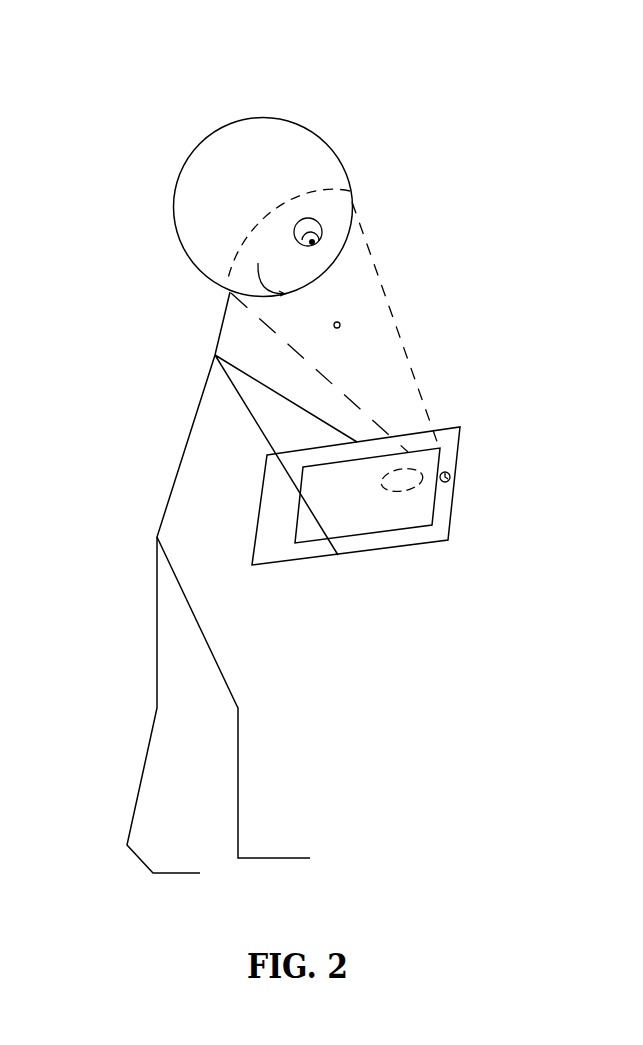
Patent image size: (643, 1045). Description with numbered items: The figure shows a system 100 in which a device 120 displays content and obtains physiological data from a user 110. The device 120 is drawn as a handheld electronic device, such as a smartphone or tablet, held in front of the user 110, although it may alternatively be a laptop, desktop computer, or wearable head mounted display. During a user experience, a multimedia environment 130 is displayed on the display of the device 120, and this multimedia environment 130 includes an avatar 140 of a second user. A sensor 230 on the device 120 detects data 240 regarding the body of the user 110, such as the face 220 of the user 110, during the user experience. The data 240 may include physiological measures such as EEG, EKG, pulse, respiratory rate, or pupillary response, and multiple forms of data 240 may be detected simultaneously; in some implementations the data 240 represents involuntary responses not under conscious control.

The system environment 100 is at (109, 126).
The user 110 is at (192, 425).
The device 120 is at (412, 543).
The multimedia environment 130 is at (351, 496).
The avatar 140 is at (385, 489).
The face 220 is at (280, 205).
The sensor 230 is at (451, 477).
The data 240 is at (407, 358).